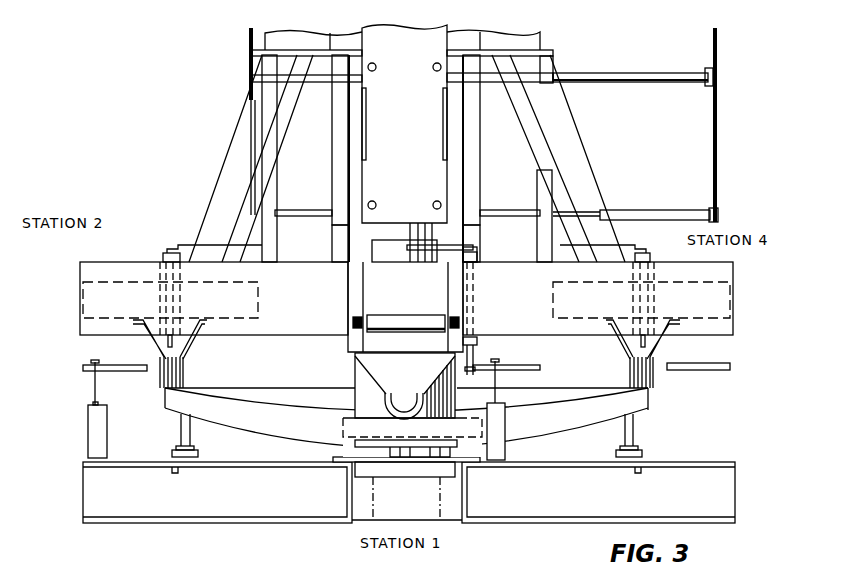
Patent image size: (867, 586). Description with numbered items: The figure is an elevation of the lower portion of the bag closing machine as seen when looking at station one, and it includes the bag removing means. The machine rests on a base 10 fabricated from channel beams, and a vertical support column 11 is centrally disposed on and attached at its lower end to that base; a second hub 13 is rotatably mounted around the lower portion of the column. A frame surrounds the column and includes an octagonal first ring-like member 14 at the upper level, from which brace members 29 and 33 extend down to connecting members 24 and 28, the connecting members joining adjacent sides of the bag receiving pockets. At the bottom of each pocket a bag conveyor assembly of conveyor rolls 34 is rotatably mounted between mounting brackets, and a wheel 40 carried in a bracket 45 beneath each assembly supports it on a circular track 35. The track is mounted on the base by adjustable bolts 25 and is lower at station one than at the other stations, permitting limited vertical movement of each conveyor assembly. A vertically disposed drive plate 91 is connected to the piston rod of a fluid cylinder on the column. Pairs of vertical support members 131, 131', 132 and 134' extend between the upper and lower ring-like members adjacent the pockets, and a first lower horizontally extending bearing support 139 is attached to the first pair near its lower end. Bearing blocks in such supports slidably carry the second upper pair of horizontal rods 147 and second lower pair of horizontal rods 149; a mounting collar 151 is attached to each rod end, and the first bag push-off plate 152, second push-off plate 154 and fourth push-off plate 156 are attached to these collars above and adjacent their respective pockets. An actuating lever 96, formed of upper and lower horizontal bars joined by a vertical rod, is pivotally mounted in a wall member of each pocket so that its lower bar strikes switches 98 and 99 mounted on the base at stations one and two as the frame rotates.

The base 10 is at (147, 525).
The vertical support column 11 is at (382, 237).
The second hub 13 is at (356, 378).
The first ring-like member 14 is at (553, 52).
The connecting member 24 is at (294, 336).
The adjustable bolts 25 is at (188, 438).
The connecting member 28 is at (576, 336).
The brace member 29 is at (242, 128).
The brace member 33 is at (572, 132).
The conveyor rolls 34 is at (406, 318).
The circular track 35 is at (230, 388).
The wheel 40 is at (653, 388).
The bracket 45 is at (628, 349).
The drive plate 91 is at (360, 118).
The actuating lever 96 is at (644, 248).
The switch 98 is at (507, 445).
The switch 99 is at (88, 410).
The vertical support member 131 is at (497, 243).
The vertical support member 131' is at (314, 243).
The vertical support member 132 is at (277, 172).
The vertical support member 134' is at (520, 216).
The first lower horizontally extending bearing support 139 is at (462, 197).
The second upper pair of horizontal rods 147 is at (622, 84).
The second lower pair of horizontal rods 149 is at (642, 212).
The mounting collar 151 is at (707, 72).
The first vertically positioned bag push-off plate 152 is at (436, 32).
The second vertically positioned bag push-off plate 154 is at (249, 52).
The fourth vertically positioned bag push-off plate 156 is at (719, 40).